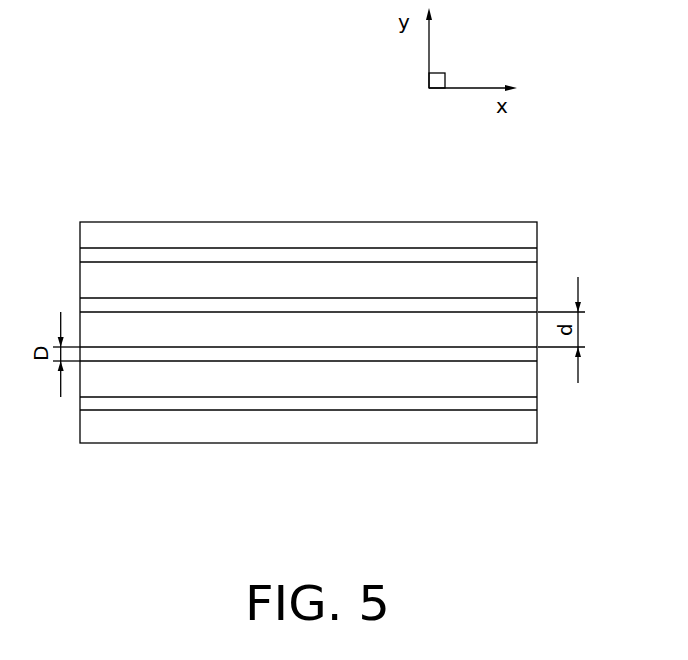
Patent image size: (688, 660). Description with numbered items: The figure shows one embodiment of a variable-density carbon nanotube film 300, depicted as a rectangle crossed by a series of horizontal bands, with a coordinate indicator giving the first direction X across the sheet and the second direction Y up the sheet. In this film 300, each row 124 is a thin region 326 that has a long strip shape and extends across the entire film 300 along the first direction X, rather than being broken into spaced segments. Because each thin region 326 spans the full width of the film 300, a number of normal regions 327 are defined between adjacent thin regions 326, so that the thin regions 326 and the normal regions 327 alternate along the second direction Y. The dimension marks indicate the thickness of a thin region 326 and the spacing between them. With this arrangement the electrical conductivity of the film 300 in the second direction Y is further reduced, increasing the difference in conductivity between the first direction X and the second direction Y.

The variable-density carbon nanotube film 300 is at (291, 265).
The normal region 327 is at (163, 235).
The thin region 326 is at (328, 355).
The row 124 is at (417, 356).